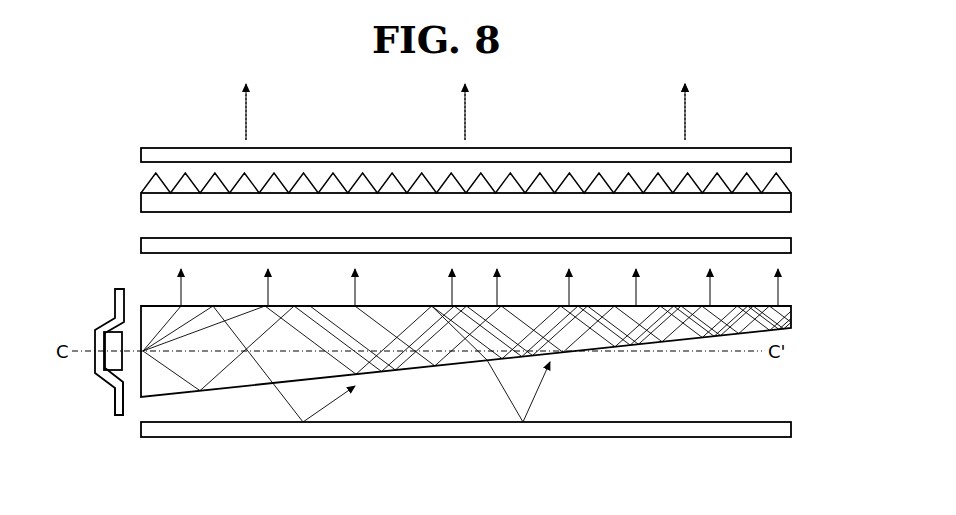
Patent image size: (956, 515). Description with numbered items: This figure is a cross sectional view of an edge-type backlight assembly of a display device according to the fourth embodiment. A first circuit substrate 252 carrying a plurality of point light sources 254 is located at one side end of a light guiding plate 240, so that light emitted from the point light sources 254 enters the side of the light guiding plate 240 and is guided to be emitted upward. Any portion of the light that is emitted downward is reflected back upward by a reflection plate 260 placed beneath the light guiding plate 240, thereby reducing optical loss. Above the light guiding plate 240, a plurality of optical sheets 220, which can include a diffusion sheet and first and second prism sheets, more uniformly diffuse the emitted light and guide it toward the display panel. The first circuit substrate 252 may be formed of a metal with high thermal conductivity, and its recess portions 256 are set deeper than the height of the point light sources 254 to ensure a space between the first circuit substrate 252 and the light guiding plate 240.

The optical sheets 220 is at (797, 148).
The light guiding plate 240 is at (793, 326).
The reflection plate 260 is at (793, 433).
The first circuit substrate 252 is at (112, 398).
The point light sources 254 is at (117, 362).
The recess portions 256 is at (93, 364).